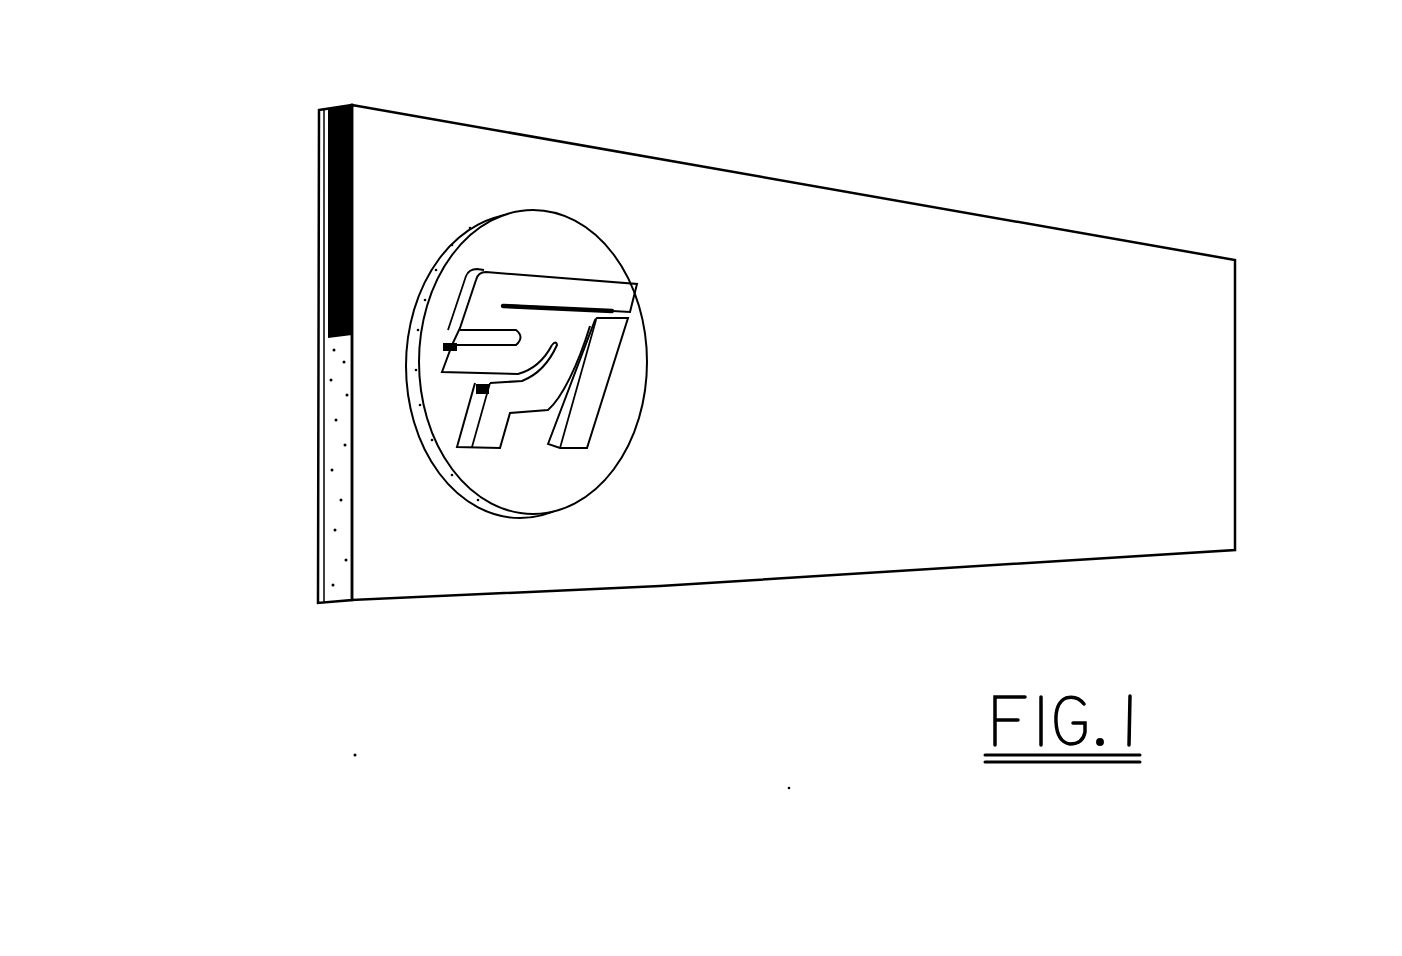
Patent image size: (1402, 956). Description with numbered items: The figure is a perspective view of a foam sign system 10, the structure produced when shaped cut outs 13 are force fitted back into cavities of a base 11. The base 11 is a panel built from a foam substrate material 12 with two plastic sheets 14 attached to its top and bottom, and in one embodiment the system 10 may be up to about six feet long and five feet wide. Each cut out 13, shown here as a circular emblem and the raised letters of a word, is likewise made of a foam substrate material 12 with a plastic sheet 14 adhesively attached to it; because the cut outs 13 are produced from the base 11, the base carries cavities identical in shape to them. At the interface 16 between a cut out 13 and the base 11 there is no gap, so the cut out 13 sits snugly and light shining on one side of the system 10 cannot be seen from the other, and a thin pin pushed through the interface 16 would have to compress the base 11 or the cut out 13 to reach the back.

The foam sign system 10 is at (1288, 299).
The base 11 is at (237, 414).
The foam substrate material 12 is at (420, 312).
The cut outs 13 is at (522, 240).
The plastic sheets 14 is at (320, 153).
The interface 16 is at (455, 236).